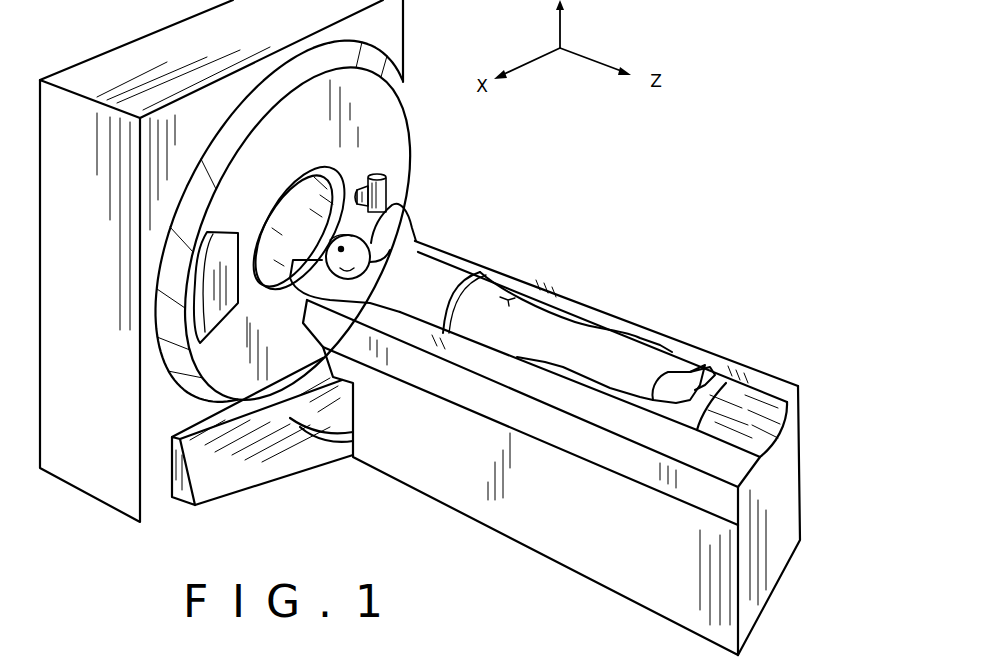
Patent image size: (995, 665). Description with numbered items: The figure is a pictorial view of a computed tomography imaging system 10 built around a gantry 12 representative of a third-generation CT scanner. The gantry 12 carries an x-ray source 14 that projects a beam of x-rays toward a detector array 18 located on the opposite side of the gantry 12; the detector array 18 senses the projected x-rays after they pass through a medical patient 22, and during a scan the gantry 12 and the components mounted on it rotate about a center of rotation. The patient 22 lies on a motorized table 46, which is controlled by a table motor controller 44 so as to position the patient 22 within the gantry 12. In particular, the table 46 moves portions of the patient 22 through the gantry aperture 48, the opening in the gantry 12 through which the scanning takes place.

The computed tomography imaging system 10 is at (326, 450).
The gantry 12 is at (72, 127).
The x-ray source 14 is at (390, 193).
The detector array 18 is at (215, 310).
The medical patient 22 is at (425, 270).
The table motor controller 44 is at (389, 659).
The motorized table 46 is at (430, 462).
The gantry aperture 48 is at (305, 205).